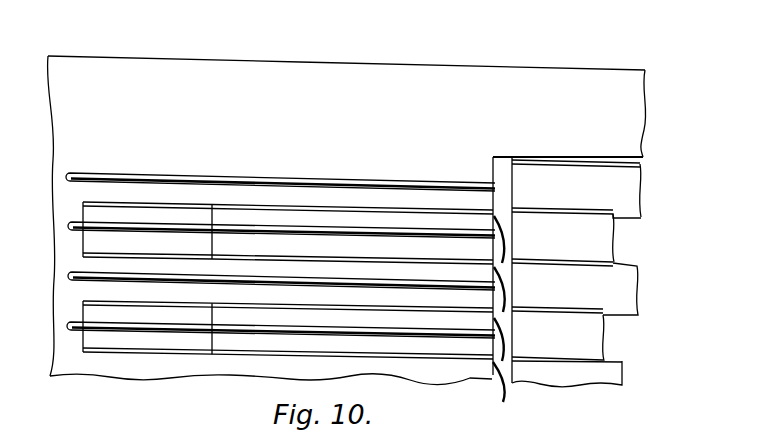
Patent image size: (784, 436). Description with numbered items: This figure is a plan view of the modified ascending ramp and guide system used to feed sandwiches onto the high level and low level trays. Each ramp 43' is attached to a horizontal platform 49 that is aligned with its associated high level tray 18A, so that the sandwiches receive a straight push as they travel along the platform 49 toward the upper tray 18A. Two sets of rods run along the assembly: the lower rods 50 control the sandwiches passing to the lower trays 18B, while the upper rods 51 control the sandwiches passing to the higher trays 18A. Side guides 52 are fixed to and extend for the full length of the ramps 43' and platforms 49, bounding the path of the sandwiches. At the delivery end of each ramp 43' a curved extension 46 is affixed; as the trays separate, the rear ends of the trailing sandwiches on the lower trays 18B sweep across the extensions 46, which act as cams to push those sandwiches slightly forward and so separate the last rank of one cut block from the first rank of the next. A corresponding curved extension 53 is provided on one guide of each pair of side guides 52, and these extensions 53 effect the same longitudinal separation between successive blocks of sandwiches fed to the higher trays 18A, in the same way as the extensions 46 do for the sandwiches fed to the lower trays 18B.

The upper tray 18A is at (605, 239).
The lower tray 18B is at (626, 198).
The ramp 43' is at (147, 278).
The curved extension 46 is at (507, 242).
The horizontal platform 49 is at (356, 254).
The lower rod 50 is at (150, 175).
The upper rod 51 is at (268, 228).
The side guide 52 is at (90, 203).
The curved extension 53 is at (507, 287).